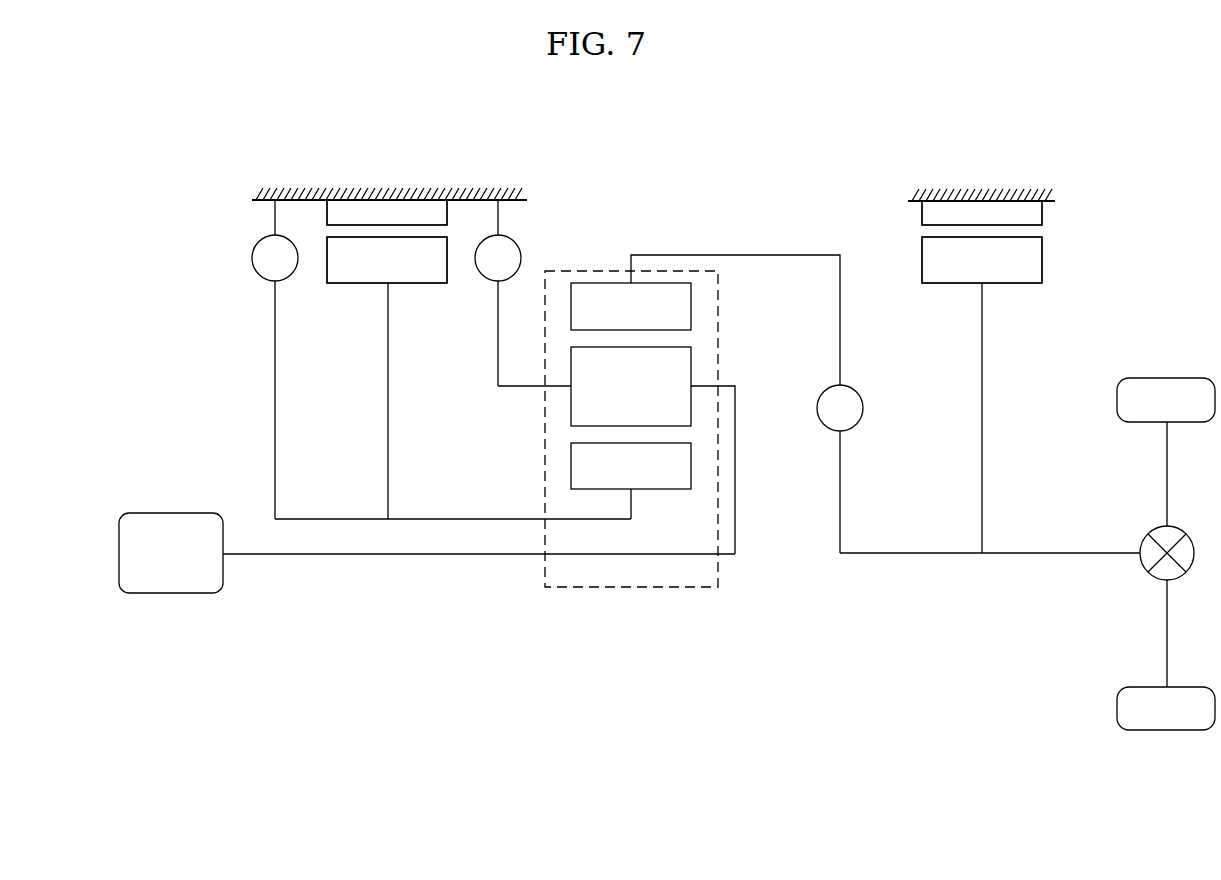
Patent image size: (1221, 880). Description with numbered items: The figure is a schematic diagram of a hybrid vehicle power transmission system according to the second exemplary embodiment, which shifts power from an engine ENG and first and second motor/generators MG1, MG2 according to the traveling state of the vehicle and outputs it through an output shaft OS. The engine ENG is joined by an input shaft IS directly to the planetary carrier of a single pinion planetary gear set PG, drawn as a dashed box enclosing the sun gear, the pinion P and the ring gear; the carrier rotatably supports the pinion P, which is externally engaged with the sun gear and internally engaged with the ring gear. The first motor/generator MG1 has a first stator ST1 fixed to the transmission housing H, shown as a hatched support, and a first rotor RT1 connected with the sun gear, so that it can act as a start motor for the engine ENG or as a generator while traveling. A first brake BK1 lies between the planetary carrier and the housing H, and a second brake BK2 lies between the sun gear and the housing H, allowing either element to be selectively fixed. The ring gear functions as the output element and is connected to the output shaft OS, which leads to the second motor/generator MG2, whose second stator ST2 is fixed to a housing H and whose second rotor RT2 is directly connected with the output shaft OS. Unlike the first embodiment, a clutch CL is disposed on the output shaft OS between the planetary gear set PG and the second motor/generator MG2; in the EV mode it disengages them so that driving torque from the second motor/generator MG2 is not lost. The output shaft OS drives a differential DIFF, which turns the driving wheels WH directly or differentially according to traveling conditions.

The transmission housing H is at (317, 197).
The first motor/generator MG1 is at (443, 121).
The first stator ST1 is at (382, 213).
The first rotor RT1 is at (423, 261).
The second brake BK2 is at (441, 359).
The first brake BK1 is at (498, 293).
The planetary gear set PG is at (603, 602).
The pinion P is at (631, 386).
The engine ENG is at (171, 553).
The input shaft IS is at (455, 556).
The clutch CL is at (840, 469).
The second motor/generator MG2 is at (1126, 210).
The second stator ST2 is at (1038, 214).
The second rotor RT2 is at (1035, 262).
The output shaft OS is at (930, 555).
The differential DIFF is at (1138, 567).
The driving wheels WH is at (1118, 398).